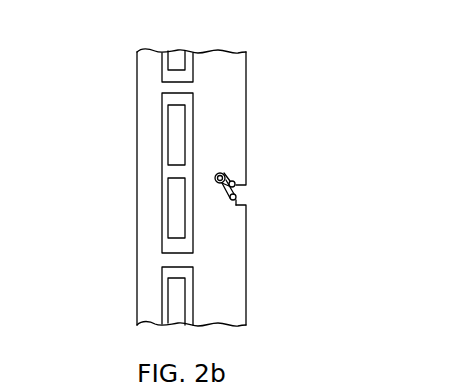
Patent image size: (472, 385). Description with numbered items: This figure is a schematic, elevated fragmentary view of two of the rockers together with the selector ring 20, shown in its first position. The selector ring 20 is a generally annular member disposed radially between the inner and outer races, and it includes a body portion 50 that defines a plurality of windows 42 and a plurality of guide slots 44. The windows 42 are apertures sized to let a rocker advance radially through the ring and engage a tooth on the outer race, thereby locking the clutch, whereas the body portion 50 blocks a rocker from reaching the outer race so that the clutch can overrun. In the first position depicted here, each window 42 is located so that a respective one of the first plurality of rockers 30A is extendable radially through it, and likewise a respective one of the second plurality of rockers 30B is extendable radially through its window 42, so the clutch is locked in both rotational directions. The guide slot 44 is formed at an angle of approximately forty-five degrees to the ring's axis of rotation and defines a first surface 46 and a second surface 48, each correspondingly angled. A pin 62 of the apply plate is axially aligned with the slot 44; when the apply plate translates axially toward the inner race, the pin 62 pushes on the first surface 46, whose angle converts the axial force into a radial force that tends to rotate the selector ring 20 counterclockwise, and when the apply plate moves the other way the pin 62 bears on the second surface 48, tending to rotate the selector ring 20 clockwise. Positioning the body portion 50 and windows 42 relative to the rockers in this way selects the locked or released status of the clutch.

The selector ring 20 is at (246, 72).
The windows 42 is at (186, 58).
The first plurality of rockers 30A is at (166, 62).
The second plurality of rockers 30B is at (167, 203).
The second surface 48 is at (233, 181).
The guide slots 44 is at (254, 199).
The first surface 46 is at (230, 201).
The body portion 50 is at (232, 231).
The pins 62 is at (216, 177).